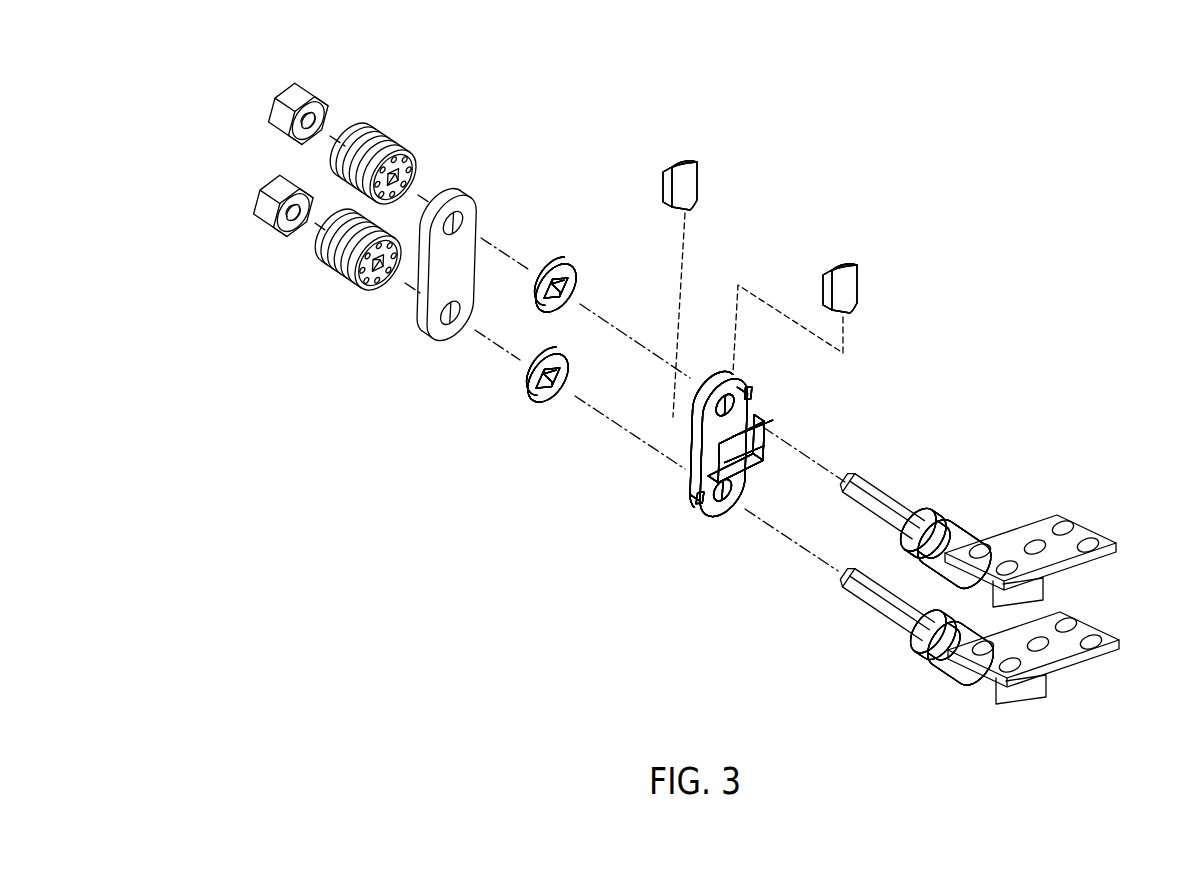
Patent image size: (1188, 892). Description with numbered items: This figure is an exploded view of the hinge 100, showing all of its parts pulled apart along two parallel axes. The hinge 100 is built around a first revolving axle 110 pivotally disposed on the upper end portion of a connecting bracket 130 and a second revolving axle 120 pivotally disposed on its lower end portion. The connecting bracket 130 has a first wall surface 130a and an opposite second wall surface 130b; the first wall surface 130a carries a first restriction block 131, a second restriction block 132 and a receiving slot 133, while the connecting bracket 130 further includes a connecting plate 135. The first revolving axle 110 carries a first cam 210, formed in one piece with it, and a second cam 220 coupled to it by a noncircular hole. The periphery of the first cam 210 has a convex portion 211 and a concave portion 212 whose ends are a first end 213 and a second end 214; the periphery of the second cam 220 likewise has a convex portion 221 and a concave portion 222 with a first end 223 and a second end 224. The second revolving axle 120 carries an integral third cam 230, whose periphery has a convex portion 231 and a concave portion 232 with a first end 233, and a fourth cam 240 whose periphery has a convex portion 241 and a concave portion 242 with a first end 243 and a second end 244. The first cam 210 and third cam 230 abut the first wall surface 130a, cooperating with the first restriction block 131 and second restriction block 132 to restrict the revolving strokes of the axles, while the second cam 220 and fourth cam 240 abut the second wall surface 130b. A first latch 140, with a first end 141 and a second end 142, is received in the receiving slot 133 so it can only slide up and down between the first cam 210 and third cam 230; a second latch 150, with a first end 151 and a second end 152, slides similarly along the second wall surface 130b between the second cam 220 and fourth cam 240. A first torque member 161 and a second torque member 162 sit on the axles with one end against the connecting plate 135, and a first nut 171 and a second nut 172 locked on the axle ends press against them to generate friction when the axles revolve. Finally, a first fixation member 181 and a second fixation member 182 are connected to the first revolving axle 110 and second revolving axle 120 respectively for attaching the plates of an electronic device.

The hinge 100 is at (388, 606).
The first revolving axle 110 is at (870, 488).
The second revolving axle 120 is at (855, 596).
The connecting bracket 130 is at (698, 500).
The first wall surface 130a is at (705, 513).
The second wall surface 130b is at (690, 485).
The first restriction block 131 is at (745, 384).
The second restriction block 132 is at (712, 505).
The receiving slot 133 is at (742, 456).
The connecting plate 135 is at (451, 192).
The first latch 140 is at (850, 283).
The first end 141 is at (840, 262).
The second end 142 is at (847, 316).
The second latch 150 is at (691, 178).
The first end 151 is at (683, 160).
The second end 152 is at (692, 206).
The first torque member 161 is at (372, 140).
The second torque member 162 is at (333, 265).
The first nut 171 is at (283, 100).
The second nut 172 is at (252, 184).
The first fixation member 181 is at (1090, 541).
The second fixation member 182 is at (1100, 637).
The first cam 210 is at (960, 422).
The convex portion 211 is at (920, 525).
The concave portion 212 is at (962, 530).
The first end 213 is at (942, 530).
The second end 214 is at (928, 565).
The second cam 220 is at (540, 143).
The convex portion 221 is at (533, 296).
The concave portion 222 is at (563, 268).
The first end 223 is at (553, 272).
The second end 224 is at (570, 310).
The third cam 230 is at (780, 675).
The convex portion 231 is at (862, 608).
The concave portion 232 is at (915, 648).
The first end 233 is at (918, 618).
The fourth cam 240 is at (430, 443).
The convex portion 241 is at (562, 398).
The concave portion 242 is at (516, 372).
The first end 243 is at (530, 393).
The second end 244 is at (575, 362).